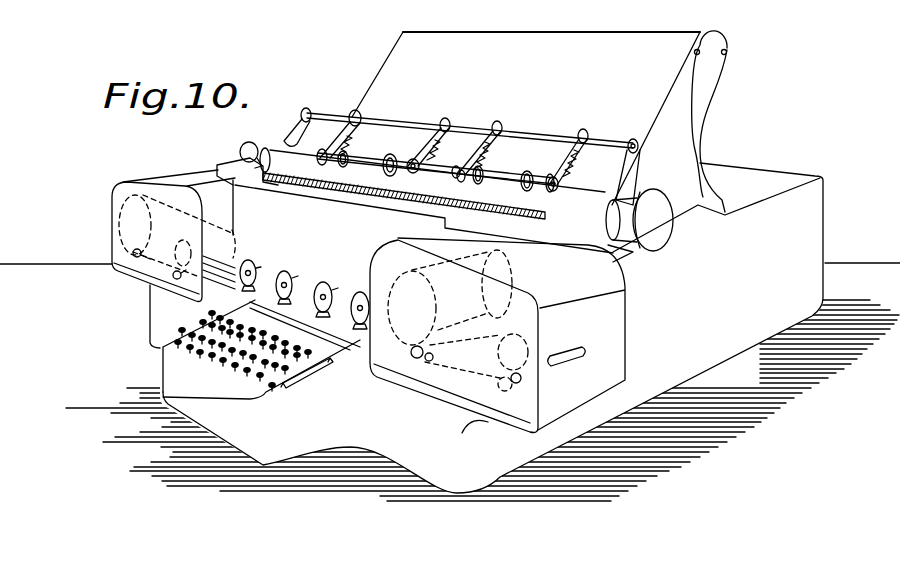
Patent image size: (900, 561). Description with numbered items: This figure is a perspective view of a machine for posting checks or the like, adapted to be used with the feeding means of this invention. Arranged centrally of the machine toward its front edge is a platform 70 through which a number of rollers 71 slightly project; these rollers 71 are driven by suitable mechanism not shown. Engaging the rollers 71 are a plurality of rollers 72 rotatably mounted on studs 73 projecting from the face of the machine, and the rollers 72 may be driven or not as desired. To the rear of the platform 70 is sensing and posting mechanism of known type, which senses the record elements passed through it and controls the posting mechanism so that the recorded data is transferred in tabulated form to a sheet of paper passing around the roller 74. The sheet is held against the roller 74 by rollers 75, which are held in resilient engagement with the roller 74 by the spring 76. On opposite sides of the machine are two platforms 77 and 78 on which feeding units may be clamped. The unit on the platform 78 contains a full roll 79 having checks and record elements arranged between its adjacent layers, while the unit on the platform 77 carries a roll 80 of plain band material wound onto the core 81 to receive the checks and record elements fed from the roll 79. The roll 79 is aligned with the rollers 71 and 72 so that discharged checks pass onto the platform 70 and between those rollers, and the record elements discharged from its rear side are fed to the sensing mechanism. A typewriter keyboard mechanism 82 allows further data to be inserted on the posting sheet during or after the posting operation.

The platform 70 is at (356, 335).
The rollers 71 is at (264, 300).
The rollers 72 is at (252, 262).
The studs 73 is at (284, 270).
The roller 74 is at (568, 194).
The rollers 75 is at (358, 153).
The spring 76 is at (452, 147).
The platform 77 is at (118, 274).
The platform 78 is at (442, 395).
The full roll 79 is at (423, 308).
The roll 80 is at (119, 183).
The core 81 is at (183, 247).
The typewriter keyboard mechanism 82 is at (227, 373).